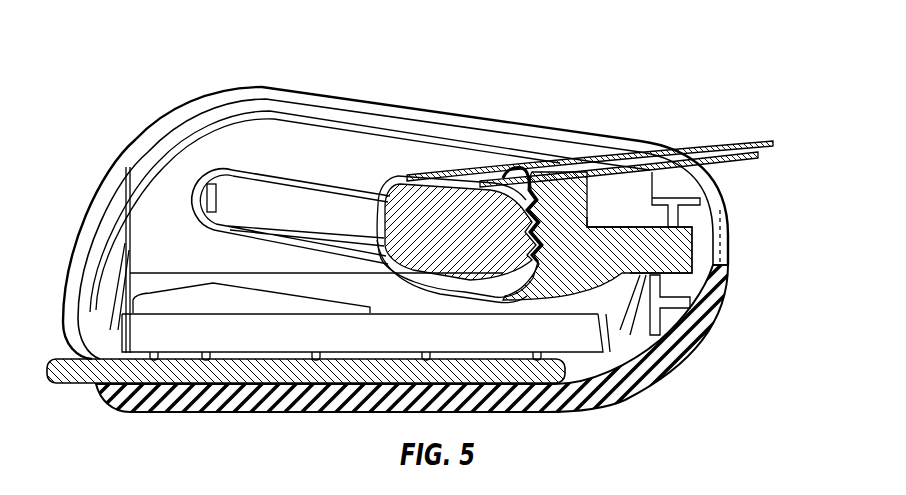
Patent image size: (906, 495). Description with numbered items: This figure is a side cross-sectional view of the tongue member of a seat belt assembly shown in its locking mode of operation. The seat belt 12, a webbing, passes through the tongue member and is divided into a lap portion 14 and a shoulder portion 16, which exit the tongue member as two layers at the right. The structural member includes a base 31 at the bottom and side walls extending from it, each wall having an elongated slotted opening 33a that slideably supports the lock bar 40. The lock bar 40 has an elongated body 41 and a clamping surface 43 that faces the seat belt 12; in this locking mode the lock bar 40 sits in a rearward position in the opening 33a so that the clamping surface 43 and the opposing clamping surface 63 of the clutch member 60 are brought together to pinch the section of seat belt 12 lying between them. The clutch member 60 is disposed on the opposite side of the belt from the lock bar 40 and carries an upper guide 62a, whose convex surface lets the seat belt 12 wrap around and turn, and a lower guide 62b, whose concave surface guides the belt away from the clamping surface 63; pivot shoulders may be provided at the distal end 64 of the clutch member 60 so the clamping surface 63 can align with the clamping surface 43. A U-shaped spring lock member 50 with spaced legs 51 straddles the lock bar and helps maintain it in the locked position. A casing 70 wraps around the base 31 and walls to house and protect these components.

The seat belt 12 is at (593, 116).
The lap portion 14 is at (738, 160).
The shoulder portion 16 is at (712, 144).
The base 31 is at (73, 373).
The opening 33a is at (350, 172).
The lock bar 40 is at (477, 202).
The elongated body 41 is at (460, 232).
The clamping surface 43 is at (506, 180).
The lock member 50 is at (225, 160).
The legs 51 is at (297, 182).
The clutch member 60 is at (637, 185).
The upper guide 62a is at (550, 170).
The lower guide 62b is at (510, 278).
The clamping surface 63 is at (585, 228).
The distal end 64 is at (677, 250).
The casing 70 is at (108, 218).